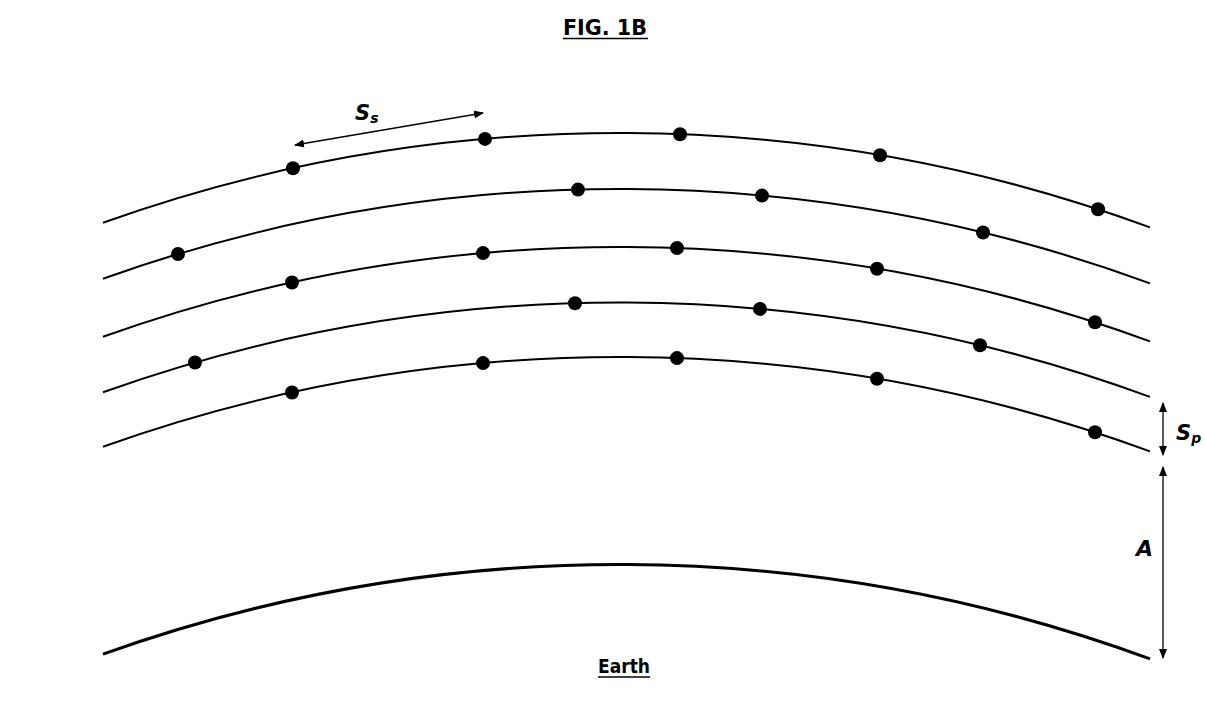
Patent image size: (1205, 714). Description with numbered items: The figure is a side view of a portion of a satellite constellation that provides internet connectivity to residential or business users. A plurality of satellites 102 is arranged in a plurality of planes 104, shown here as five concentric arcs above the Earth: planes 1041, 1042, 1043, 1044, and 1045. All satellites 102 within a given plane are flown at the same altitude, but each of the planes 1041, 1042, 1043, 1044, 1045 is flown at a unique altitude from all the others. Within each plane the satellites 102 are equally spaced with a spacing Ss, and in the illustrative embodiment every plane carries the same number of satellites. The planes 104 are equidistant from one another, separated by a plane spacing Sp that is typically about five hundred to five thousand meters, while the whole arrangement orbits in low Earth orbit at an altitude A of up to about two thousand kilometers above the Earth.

The satellites 102 is at (887, 143).
The planes 104 is at (594, 298).
The first plane 1041 is at (594, 410).
The second plane 1042 is at (594, 354).
The third plane 1043 is at (594, 299).
The fourth plane 1044 is at (594, 241).
The fifth plane 1045 is at (594, 185).